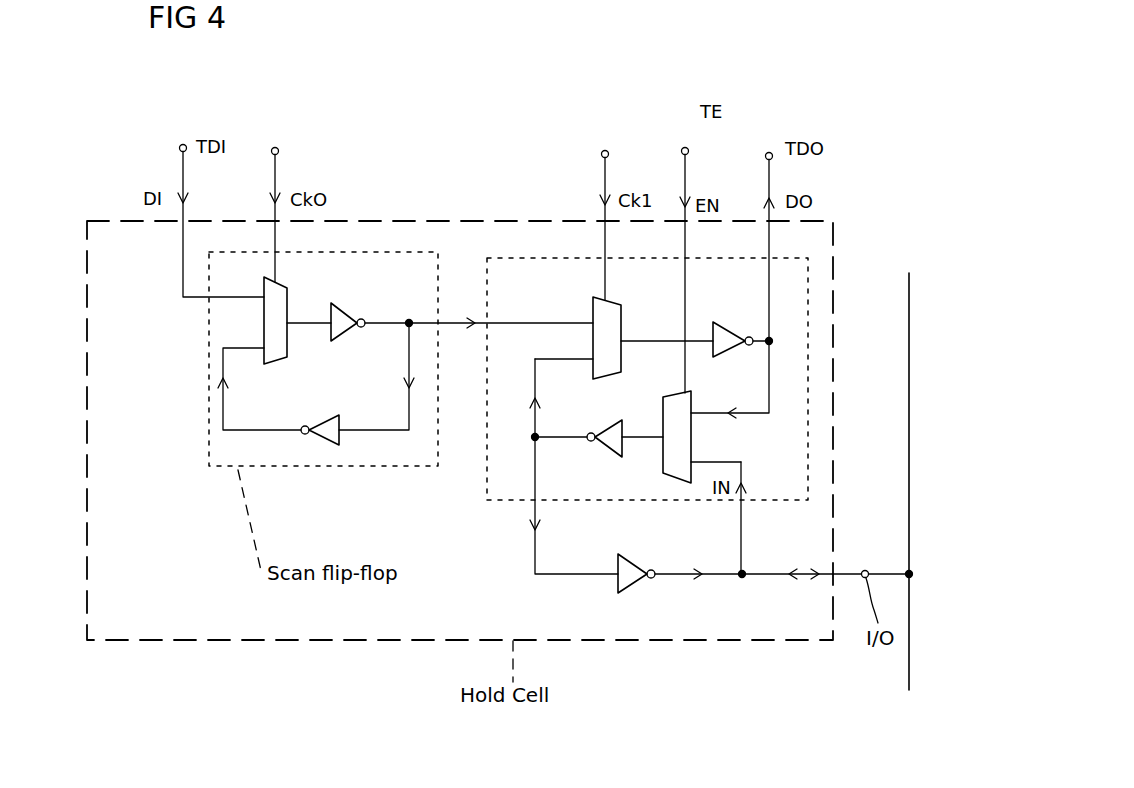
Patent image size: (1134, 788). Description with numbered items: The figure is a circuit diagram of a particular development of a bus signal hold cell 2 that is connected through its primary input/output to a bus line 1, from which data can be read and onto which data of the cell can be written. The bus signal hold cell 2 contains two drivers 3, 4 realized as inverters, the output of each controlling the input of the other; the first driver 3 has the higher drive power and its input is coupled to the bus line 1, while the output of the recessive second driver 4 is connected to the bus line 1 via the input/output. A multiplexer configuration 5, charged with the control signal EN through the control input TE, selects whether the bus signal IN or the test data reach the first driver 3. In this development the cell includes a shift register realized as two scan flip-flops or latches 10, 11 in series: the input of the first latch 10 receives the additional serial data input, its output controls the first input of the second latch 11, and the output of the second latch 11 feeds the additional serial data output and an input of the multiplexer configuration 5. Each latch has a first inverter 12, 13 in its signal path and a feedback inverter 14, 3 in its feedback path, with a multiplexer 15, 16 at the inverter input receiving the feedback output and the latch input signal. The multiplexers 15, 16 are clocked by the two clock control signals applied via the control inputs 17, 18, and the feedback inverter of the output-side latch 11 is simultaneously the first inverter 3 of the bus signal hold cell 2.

The bus line 1 is at (909, 360).
The bus signal hold cell 2 is at (145, 637).
The first driver 3 is at (612, 457).
The second driver 4 is at (632, 594).
The multiplexer configuration 5 is at (665, 393).
The first latch 10 is at (216, 467).
The second latch 11 is at (492, 502).
The first inverter 12 is at (346, 306).
The first inverter 13 is at (720, 320).
The feedback inverter 14 is at (325, 447).
The multiplexer 15 is at (289, 293).
The multiplexer 16 is at (623, 308).
The control input 17 is at (278, 150).
The control input 18 is at (608, 152).